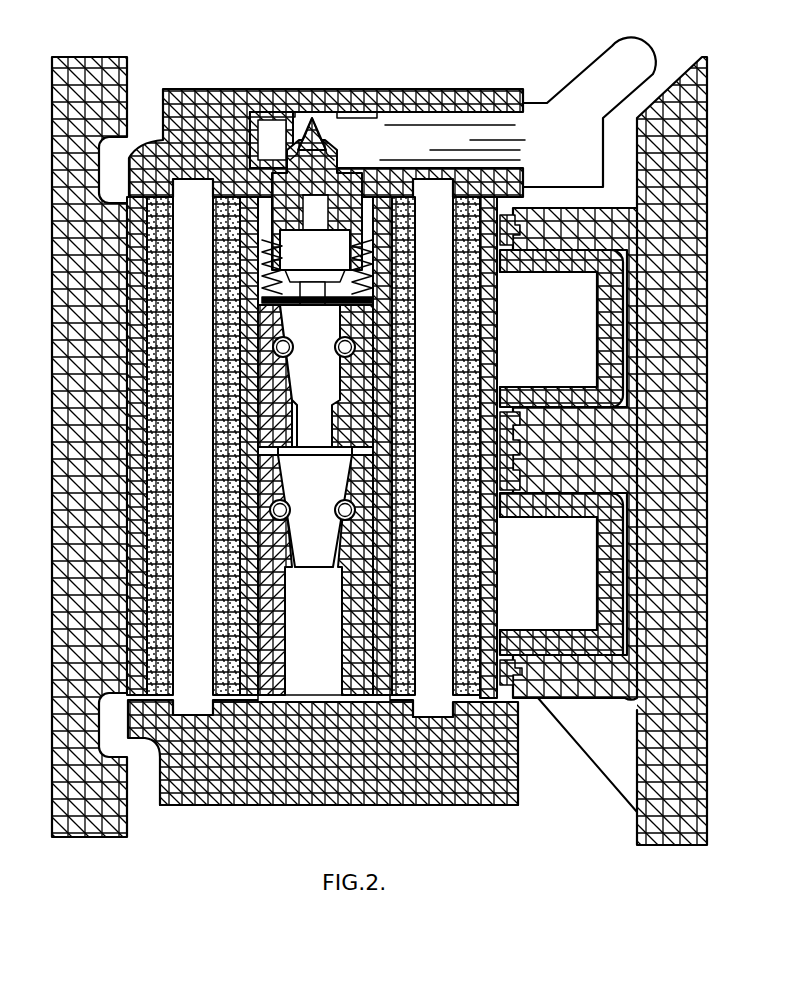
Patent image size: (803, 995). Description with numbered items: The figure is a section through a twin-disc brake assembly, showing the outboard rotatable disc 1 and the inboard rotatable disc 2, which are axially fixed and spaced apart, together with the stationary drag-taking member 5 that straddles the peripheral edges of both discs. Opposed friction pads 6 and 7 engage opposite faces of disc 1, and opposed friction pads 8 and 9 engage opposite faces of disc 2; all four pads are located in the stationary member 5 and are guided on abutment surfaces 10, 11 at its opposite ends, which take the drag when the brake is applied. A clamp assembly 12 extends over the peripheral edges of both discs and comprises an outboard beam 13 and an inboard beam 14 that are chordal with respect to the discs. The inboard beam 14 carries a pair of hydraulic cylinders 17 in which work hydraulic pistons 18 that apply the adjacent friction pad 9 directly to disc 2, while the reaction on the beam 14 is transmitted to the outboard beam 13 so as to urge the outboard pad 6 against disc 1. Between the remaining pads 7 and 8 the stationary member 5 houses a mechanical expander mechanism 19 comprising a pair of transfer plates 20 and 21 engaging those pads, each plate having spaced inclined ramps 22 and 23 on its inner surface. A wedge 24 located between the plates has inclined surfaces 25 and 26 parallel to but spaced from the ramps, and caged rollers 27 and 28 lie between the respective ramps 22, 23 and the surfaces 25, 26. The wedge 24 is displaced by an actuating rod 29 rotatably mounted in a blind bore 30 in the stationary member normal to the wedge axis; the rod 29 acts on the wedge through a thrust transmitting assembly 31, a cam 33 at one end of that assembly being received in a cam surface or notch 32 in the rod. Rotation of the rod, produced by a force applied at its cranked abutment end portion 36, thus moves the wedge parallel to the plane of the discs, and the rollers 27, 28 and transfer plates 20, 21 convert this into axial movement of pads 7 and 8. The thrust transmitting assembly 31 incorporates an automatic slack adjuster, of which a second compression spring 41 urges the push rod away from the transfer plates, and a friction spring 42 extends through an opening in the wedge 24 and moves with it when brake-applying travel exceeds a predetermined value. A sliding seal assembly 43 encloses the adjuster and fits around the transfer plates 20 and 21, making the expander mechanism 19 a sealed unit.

The outboard rotatable disc 1 is at (195, 700).
The inboard rotatable disc 2 is at (437, 703).
The stationary drag-taking member 5 is at (330, 787).
The friction pad 6 is at (161, 222).
The friction pad 7 is at (227, 222).
The friction pad 8 is at (406, 222).
The friction pad 9 is at (467, 222).
The abutment surface 10 is at (270, 195).
The abutment surface 11 is at (268, 645).
The clamp assembly 12 is at (668, 506).
The outboard beam 13 is at (80, 818).
The inboard beam 14 is at (672, 822).
The hydraulic cylinder 17 is at (630, 323).
The hydraulic piston 18 is at (606, 383).
The mechanical expander mechanism 19 is at (315, 270).
The transfer plate 20 is at (263, 702).
The transfer plate 21 is at (385, 700).
The inclined ramp 22 is at (270, 542).
The inclined ramp 23 is at (260, 383).
The wedge 24 is at (313, 403).
The inclined surface 25 is at (260, 493).
The inclined surface 26 is at (260, 325).
The caged roller 27 is at (270, 510).
The caged roller 28 is at (273, 347).
The actuating rod 29 is at (453, 137).
The blind bore 30 is at (388, 108).
The thrust transmitting assembly 31 is at (345, 240).
The cam surface or notch 32 is at (334, 170).
The cam 33 is at (308, 128).
The cranked abutment end portion 36 is at (630, 68).
The second compression spring 41 is at (358, 276).
The friction spring 42 is at (322, 468).
The sliding seal assembly 43 is at (262, 260).